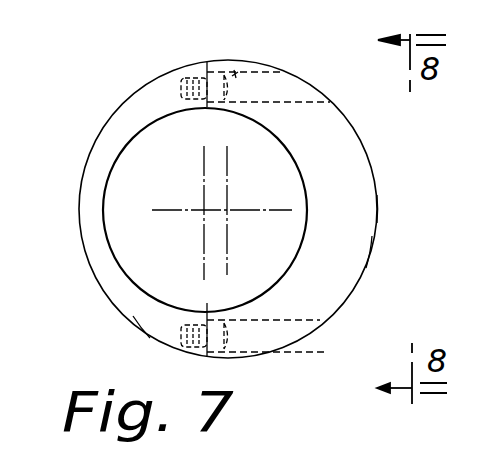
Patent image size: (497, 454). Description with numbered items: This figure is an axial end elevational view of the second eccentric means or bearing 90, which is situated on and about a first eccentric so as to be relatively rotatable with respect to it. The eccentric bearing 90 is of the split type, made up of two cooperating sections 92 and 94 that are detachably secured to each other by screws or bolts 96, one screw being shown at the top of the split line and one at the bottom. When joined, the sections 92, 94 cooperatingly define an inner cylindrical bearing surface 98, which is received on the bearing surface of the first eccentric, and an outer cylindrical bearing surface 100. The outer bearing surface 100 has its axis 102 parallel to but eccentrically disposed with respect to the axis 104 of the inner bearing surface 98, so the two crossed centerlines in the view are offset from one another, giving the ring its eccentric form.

The second eccentric means or bearing 90 is at (369, 153).
The cooperating section 92 is at (148, 323).
The cooperating section 94 is at (357, 253).
The screws or bolts 96 is at (238, 72).
The inner cylindrical bearing surface 98 is at (147, 127).
The outer cylindrical bearing surface 100 is at (378, 208).
The axis of outer cylindrical bearing surface 102 is at (229, 207).
The axis of inner bearing surface 104 is at (203, 212).